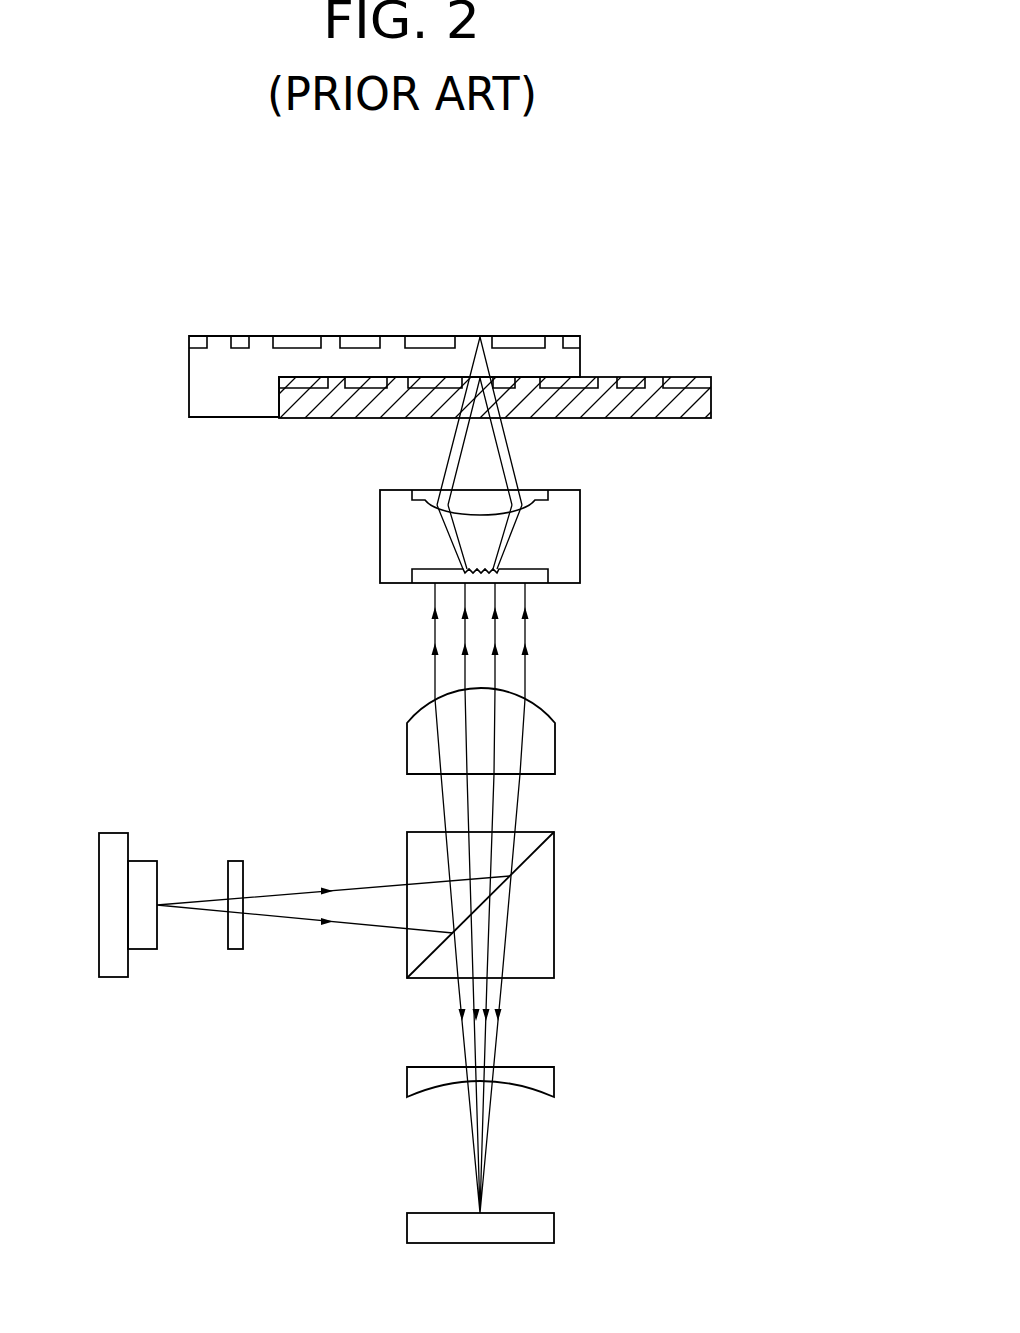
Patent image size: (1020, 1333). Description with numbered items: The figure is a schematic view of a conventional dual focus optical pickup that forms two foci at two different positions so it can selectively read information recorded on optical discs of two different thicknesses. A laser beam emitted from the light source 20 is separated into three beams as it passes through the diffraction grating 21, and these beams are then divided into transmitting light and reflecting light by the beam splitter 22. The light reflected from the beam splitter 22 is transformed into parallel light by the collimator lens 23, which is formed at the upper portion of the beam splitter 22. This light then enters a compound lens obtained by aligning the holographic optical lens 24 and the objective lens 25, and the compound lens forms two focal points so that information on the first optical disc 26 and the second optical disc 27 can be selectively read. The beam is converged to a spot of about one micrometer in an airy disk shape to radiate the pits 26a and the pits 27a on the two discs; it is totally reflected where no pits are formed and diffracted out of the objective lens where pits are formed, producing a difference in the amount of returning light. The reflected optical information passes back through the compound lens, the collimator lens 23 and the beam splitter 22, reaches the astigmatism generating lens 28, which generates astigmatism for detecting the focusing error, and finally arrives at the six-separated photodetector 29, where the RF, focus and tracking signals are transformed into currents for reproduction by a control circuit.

The light source 20 is at (113, 977).
The diffraction grating 21 is at (235, 949).
The beam splitter 22 is at (554, 907).
The collimator lens 23 is at (555, 735).
The holographic optical lens 24 is at (412, 573).
The objective lens 25 is at (418, 500).
The first optical disc 26 is at (711, 398).
The pits 26a is at (653, 380).
The second optical disc 27 is at (189, 393).
The pits 27a is at (220, 343).
The astigmatism generating lens 28 is at (554, 1082).
The 6-separated photodetector 29 is at (554, 1232).